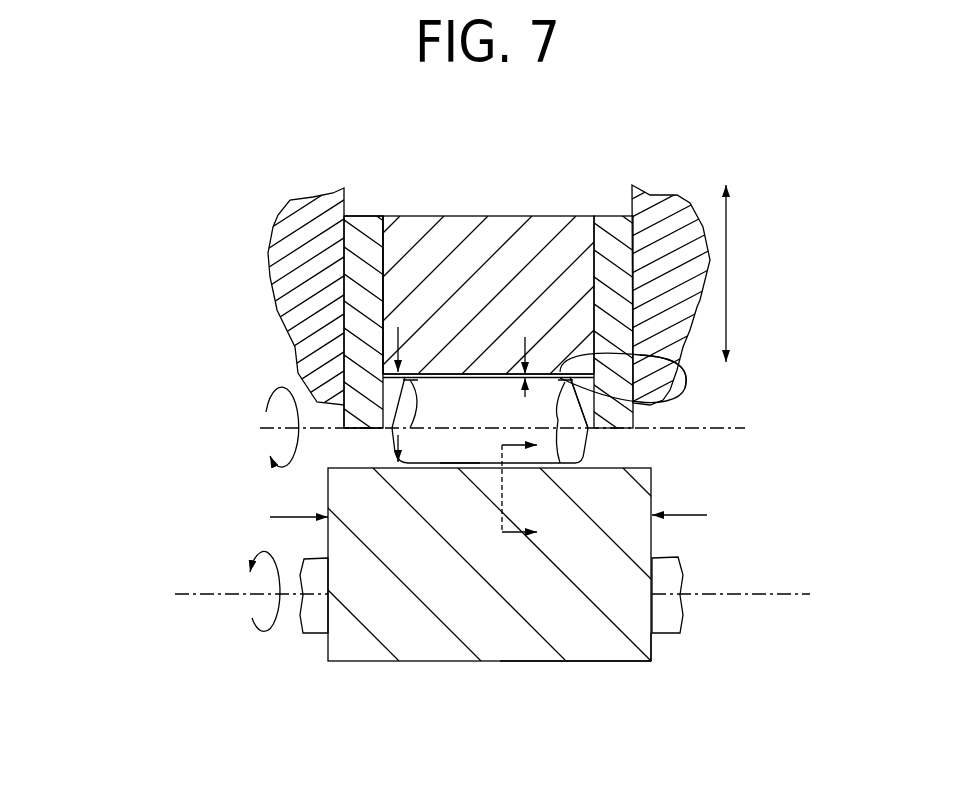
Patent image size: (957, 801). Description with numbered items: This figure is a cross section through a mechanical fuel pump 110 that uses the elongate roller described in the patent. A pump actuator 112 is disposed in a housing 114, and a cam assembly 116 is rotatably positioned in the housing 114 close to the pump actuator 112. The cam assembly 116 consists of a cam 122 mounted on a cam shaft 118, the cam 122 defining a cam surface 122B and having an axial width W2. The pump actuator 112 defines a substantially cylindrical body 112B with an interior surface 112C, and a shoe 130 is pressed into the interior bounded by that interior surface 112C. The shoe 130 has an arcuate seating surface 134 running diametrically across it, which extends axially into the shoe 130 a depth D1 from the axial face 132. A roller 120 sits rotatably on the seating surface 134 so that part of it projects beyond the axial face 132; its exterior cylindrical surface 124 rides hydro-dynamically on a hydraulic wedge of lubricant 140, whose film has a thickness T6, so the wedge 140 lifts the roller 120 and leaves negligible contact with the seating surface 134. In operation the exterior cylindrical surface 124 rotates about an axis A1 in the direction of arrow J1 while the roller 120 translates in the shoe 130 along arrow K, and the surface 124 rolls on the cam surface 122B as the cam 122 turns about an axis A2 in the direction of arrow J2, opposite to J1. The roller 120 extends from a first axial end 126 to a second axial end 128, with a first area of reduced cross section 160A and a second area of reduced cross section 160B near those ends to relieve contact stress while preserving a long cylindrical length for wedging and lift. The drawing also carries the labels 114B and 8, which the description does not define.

The mechanical fuel pump 110 is at (145, 260).
The housing 114 is at (267, 240).
The top surface of tool holder 114B is at (363, 215).
The pump actuator 112 is at (617, 230).
The substantially cylindrical body 112B is at (365, 293).
The interior surface 112C is at (397, 230).
The shoe 130 is at (510, 228).
The roller 120 is at (668, 401).
The hydraulic wedge of lubricant 140 is at (687, 372).
The seating surface 134 is at (480, 380).
The exterior cylindrical surface 124 is at (437, 378).
The first area of reduced cross section 160A is at (400, 435).
The second area of reduced cross section 160B is at (571, 445).
The second axial end 128 is at (617, 432).
The axial face 132 is at (466, 470).
The first axial end 126 is at (341, 432).
The section line 8- 8 is at (519, 491).
The cam assembly 116 is at (413, 650).
The cam shaft 118 is at (665, 575).
The cam 122 is at (652, 651).
The cam surface 122B is at (580, 661).
The arrow K is at (733, 237).
The depth D1 is at (398, 333).
The thickness T6 is at (543, 330).
The axis A1 is at (720, 428).
The axis A2 is at (782, 596).
The arrow J1 is at (268, 392).
The arrow J2 is at (253, 634).
The axial width W2 is at (692, 513).